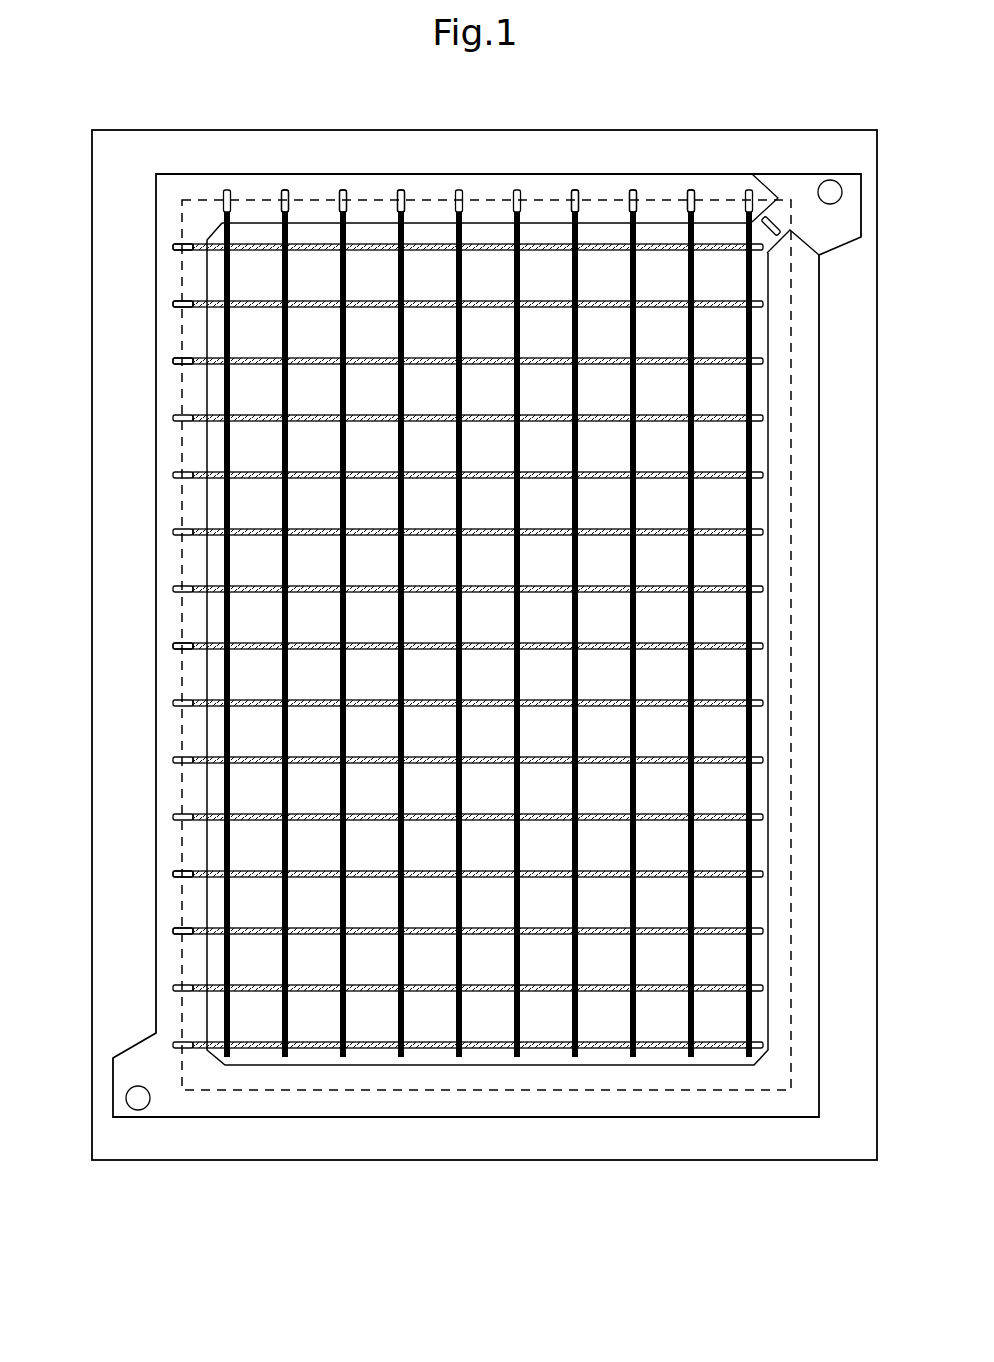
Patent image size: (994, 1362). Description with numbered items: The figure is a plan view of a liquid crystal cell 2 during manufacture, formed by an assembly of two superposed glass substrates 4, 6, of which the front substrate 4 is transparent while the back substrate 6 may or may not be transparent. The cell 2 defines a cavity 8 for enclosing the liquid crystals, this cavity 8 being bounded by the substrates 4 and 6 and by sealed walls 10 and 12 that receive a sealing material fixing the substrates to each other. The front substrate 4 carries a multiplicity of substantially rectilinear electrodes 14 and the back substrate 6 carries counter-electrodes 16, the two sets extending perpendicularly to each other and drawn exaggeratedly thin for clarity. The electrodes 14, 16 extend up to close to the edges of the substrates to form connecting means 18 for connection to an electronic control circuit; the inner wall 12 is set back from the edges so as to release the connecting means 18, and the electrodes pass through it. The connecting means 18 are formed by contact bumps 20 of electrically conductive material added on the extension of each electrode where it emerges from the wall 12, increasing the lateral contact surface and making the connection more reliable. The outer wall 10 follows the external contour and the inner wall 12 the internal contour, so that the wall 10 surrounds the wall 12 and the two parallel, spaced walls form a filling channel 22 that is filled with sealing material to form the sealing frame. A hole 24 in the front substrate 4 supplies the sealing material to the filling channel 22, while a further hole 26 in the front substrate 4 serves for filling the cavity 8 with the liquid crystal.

The liquid crystal cell 2 is at (816, 122).
The front substrate 4 is at (484, 624).
The back substrate 6 is at (481, 157).
The cavity 8 is at (495, 691).
The sealed wall 10 is at (156, 775).
The wall 12 is at (207, 460).
The electrodes 14 is at (763, 473).
The counter-electrodes 16 is at (745, 1010).
The connecting means 18 is at (408, 189).
The contact bumps 20 is at (291, 192).
The filling channel 22 is at (778, 866).
The hole 24 is at (138, 1098).
The hole 26 is at (832, 196).